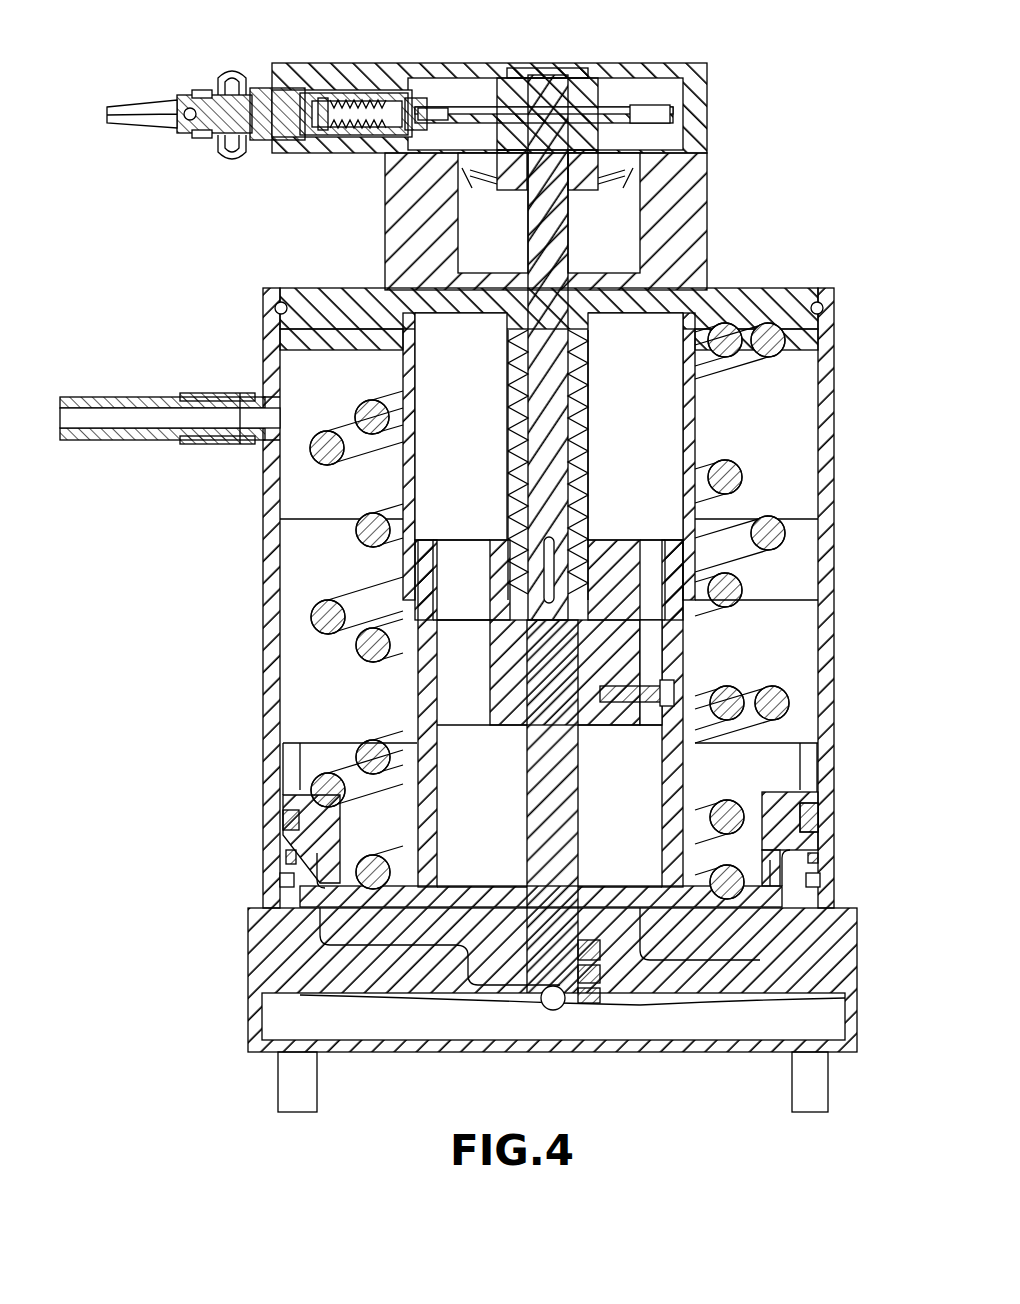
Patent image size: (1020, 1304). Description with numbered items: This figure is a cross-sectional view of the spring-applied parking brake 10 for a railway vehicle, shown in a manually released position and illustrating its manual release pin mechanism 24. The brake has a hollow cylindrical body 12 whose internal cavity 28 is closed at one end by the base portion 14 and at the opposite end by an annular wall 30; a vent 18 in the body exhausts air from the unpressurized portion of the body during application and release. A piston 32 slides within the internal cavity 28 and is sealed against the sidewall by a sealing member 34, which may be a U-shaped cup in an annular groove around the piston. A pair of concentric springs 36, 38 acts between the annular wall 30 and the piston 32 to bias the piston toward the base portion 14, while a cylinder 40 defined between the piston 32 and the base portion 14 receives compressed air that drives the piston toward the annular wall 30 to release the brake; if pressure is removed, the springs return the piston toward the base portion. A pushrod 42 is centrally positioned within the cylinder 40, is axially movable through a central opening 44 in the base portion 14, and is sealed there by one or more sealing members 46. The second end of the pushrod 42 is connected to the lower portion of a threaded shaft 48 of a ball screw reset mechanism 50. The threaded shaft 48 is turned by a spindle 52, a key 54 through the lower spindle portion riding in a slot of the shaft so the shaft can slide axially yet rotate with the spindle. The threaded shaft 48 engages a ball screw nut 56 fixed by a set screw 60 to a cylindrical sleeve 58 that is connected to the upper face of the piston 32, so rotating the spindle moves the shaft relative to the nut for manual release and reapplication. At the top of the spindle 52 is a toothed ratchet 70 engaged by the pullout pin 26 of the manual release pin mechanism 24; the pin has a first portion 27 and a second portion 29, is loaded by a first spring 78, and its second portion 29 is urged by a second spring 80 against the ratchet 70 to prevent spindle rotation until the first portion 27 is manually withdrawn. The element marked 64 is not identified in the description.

The parking brake 10 is at (828, 126).
The cylindrical body 12 is at (828, 453).
The base portion 14 is at (825, 948).
The vent 18 is at (118, 440).
The manual release pin mechanism 24 is at (194, 40).
The pullout pin 26 is at (108, 144).
The first portion 27 is at (285, 108).
The internal cavity 28 is at (748, 647).
The second portion 29 is at (418, 100).
The annular wall 30 is at (768, 300).
The piston 32 is at (800, 795).
The sealing member 34 is at (814, 818).
The spring 36 is at (738, 463).
The spring 38 is at (760, 545).
The cylinder 40 is at (290, 882).
The pushrod 42 is at (550, 878).
The central opening 44 is at (556, 1010).
The sealing members 46 is at (600, 1000).
The threaded shaft 48 is at (588, 432).
The ball screw reset mechanism 50 is at (475, 441).
The spindle 52 is at (545, 240).
The key 54 is at (565, 540).
The ball screw nut 56 is at (500, 540).
The cylindrical sleeve 58 is at (420, 694).
The set screw 60 is at (672, 694).
The valve seat 64 is at (585, 183).
The toothed ratchet 70 is at (632, 115).
The first spring 78 is at (272, 95).
The second spring 80 is at (358, 100).